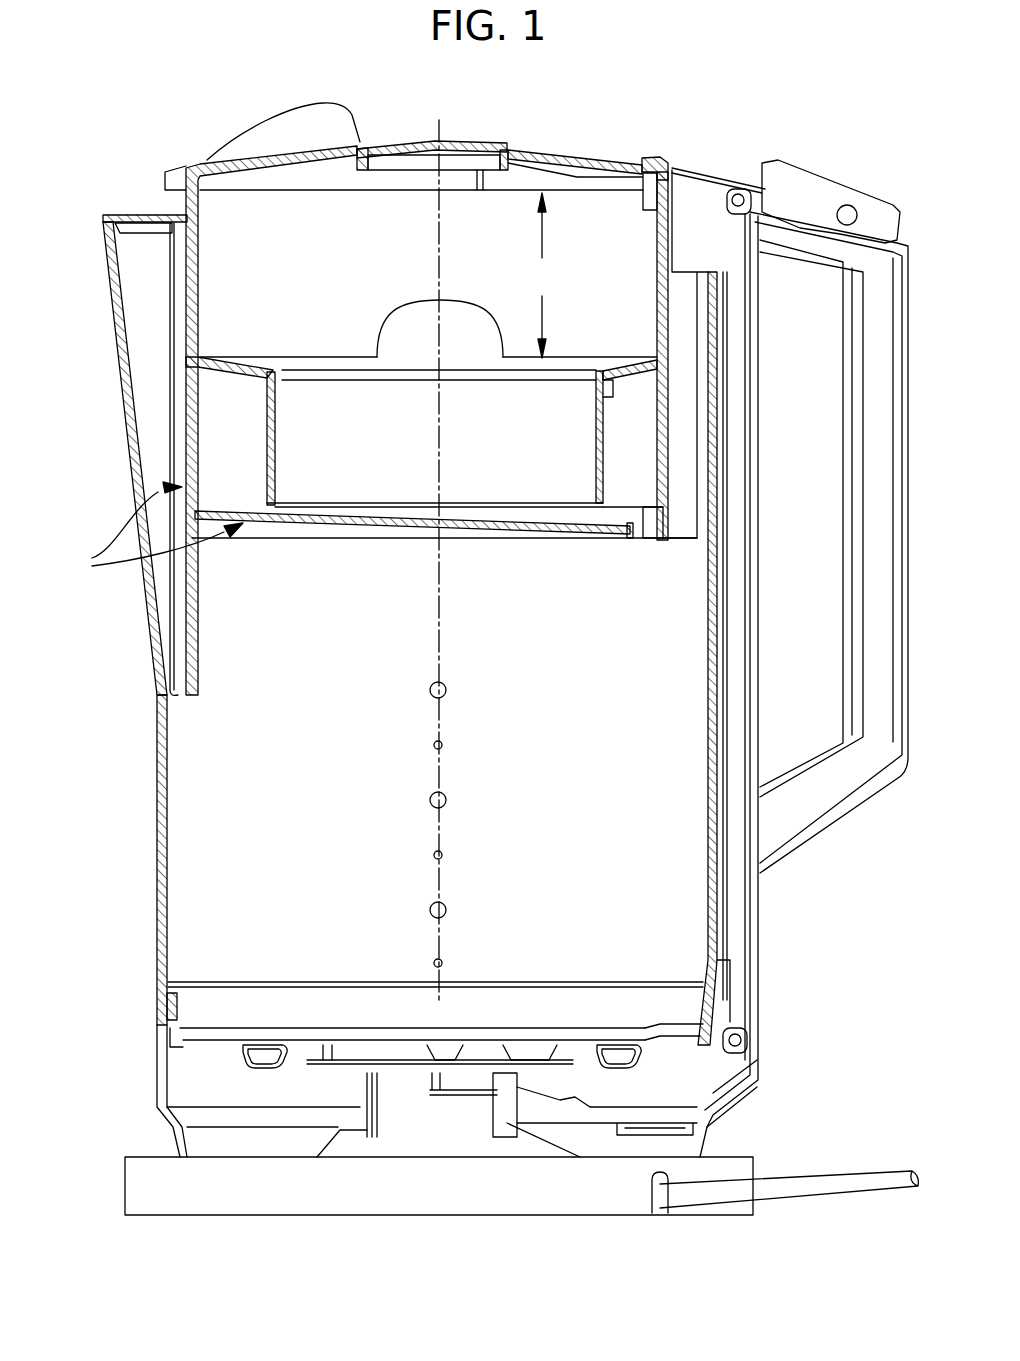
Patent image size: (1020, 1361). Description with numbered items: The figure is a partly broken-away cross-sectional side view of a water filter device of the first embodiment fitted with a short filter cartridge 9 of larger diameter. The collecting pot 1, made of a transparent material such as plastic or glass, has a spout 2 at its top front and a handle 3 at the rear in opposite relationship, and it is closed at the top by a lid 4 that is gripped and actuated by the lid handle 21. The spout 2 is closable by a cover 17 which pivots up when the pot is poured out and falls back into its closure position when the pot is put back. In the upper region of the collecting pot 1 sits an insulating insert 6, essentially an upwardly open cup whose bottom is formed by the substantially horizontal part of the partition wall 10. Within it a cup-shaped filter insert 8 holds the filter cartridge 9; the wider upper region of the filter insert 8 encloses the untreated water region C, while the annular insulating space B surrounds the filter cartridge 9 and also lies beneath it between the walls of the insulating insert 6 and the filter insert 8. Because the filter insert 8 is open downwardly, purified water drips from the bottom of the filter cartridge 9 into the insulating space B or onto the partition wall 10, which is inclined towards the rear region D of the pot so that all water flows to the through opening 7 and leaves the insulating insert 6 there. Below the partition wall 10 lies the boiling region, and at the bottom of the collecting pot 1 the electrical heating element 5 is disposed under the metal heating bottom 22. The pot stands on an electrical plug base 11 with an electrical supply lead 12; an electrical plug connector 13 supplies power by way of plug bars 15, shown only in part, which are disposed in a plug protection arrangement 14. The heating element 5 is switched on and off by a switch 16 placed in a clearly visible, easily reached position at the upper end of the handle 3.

The collecting pot 1 is at (157, 733).
The spout 2 is at (108, 292).
The handle 3 is at (840, 790).
The lid 4 is at (546, 163).
The electrical heating element 5 is at (263, 1060).
The insulating insert 6 is at (158, 531).
The through opening 7 is at (643, 532).
The filter insert 8 is at (190, 372).
The filter cartridge 9 is at (345, 415).
The partition wall 10 is at (344, 524).
The electrical plug base 11 is at (160, 1193).
The electrical supply lead 12 is at (820, 1193).
The electrical plug connector 13 is at (377, 1113).
The plug protection arrangement 14 is at (507, 1113).
The plug bars 15 is at (443, 1080).
The switch 16 is at (850, 170).
The cover 17 is at (130, 215).
The lid handle 21 is at (275, 132).
The metal heating bottom 22 is at (200, 1040).
The insulating space B is at (636, 446).
The untreated water region C is at (541, 275).
The rear region D is at (684, 452).